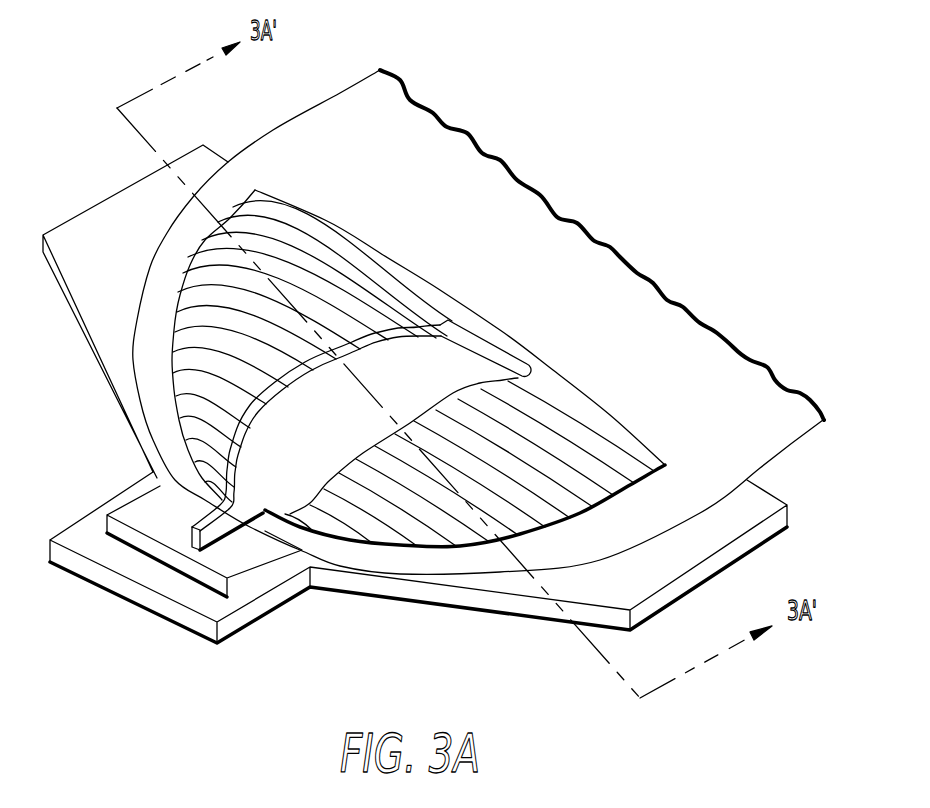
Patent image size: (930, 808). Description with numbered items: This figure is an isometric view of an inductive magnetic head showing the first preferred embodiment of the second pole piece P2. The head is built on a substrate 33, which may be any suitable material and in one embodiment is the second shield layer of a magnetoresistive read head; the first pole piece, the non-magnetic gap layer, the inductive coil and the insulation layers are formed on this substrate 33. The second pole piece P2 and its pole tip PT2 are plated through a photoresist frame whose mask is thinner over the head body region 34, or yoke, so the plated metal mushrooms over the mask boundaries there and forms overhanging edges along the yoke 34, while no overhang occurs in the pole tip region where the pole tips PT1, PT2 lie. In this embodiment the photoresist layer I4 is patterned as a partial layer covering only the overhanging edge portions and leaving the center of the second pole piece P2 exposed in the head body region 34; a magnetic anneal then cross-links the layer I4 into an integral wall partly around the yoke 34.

The photoresist layer I4 is at (594, 404).
The head body region 34 is at (380, 373).
The second pole piece P2 is at (321, 438).
The first pole tip PT1 is at (140, 515).
The pole tip PT2 is at (195, 540).
The substrate 33 is at (438, 612).